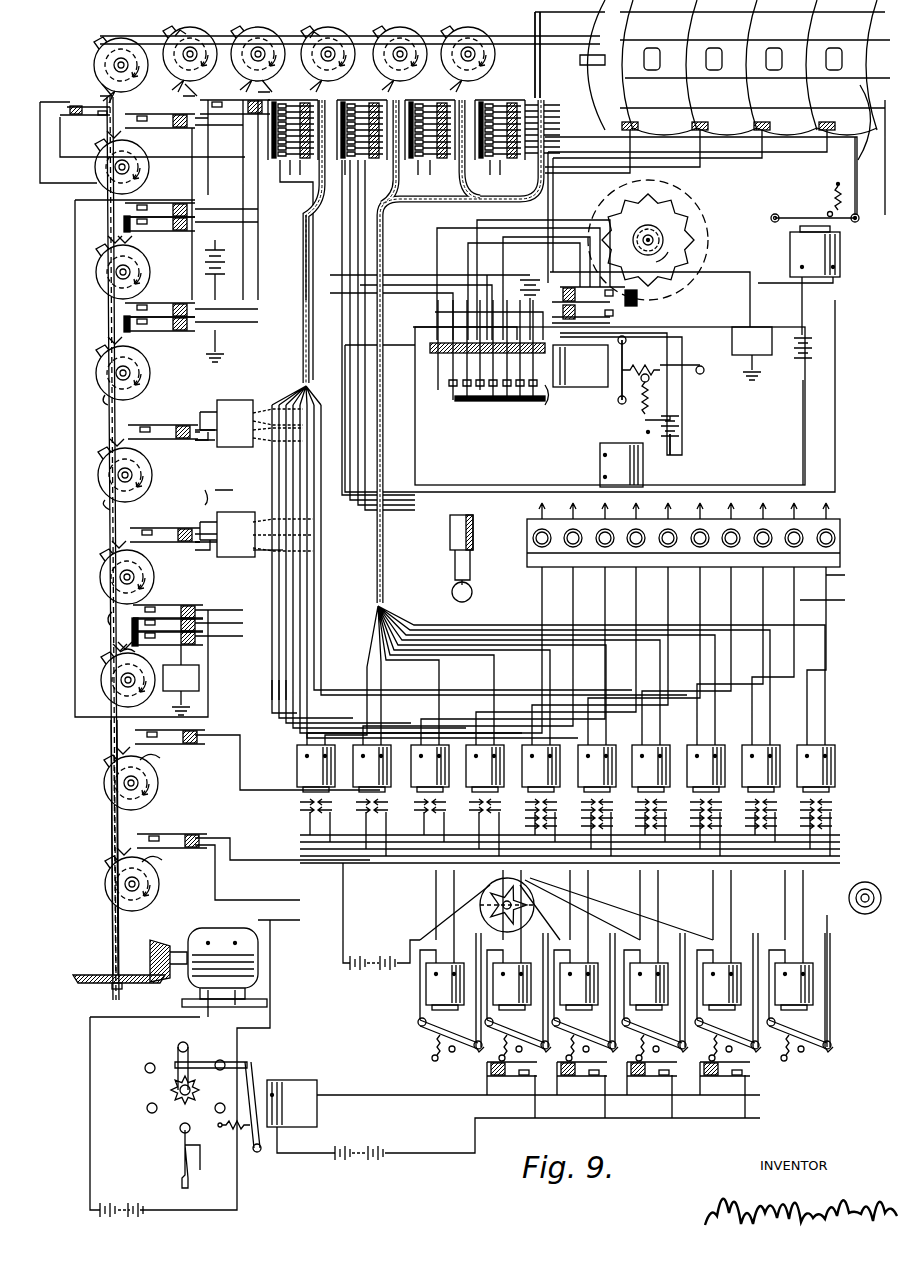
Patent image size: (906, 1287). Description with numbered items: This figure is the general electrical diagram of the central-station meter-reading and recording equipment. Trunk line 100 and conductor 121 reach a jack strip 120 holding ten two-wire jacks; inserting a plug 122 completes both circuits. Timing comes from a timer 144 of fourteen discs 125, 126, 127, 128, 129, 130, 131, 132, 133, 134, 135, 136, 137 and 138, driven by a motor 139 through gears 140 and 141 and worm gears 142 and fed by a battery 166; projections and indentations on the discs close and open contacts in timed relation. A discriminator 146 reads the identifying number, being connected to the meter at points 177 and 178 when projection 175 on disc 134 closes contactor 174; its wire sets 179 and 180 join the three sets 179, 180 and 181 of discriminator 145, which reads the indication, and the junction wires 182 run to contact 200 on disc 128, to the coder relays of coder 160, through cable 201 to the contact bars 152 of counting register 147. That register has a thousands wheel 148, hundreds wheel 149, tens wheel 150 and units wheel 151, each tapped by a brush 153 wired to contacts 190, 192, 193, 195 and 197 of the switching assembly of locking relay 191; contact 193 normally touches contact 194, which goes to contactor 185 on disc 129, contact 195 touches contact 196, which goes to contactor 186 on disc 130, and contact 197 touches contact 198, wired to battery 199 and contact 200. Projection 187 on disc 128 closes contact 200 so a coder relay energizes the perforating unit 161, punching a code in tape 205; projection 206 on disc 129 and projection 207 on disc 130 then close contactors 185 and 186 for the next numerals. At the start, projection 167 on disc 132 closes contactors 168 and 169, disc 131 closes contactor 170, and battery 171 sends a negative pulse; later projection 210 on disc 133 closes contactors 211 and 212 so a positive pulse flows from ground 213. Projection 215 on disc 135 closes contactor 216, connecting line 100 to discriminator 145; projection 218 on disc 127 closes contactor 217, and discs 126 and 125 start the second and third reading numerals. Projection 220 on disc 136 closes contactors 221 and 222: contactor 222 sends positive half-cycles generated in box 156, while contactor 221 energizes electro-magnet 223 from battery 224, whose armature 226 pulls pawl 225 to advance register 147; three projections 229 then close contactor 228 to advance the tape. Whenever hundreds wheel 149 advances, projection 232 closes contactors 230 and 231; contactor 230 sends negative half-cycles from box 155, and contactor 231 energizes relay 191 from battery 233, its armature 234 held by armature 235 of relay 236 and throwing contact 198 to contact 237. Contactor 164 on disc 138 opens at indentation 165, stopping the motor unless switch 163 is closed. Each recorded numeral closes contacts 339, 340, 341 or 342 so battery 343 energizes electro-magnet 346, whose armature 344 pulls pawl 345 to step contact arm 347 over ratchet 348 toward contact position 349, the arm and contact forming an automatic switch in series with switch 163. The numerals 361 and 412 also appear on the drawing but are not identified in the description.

The trunk line 100 is at (828, 516).
The jack strip 120 is at (842, 541).
The conductor 121 is at (468, 518).
The plug 122 is at (474, 538).
The disc 125 is at (454, 36).
The disc 126 is at (388, 36).
The disc 127 is at (322, 36).
The disc 128 is at (242, 36).
The disc 129 is at (184, 36).
The disc 130 is at (110, 40).
The disc 131 is at (95, 182).
The disc 132 is at (96, 272).
The disc 133 is at (96, 376).
The disc 134 is at (98, 476).
The disc 135 is at (100, 578).
The disc 136 is at (100, 682).
The disc 137 is at (104, 785).
The disc 138 is at (106, 884).
The motor 139 is at (260, 961).
The gear 140 is at (152, 940).
The gear 141 is at (95, 975).
The worm gears 142 is at (120, 788).
The timer 144 is at (80, 754).
The discriminator 145 is at (213, 550).
The discriminator 146 is at (215, 410).
The counting register 147 is at (772, 203).
The thousands number wheel 148 is at (634, 132).
The hundreds wheel 149 is at (700, 132).
The tens wheel 150 is at (762, 132).
The units wheel 151 is at (827, 132).
The electrical contactor bars 152 is at (538, 48).
The brush 153 is at (862, 150).
The alternating current generator and rectifier 155 is at (762, 365).
The alternating current generator and rectifier 156 is at (200, 688).
The coder 160 is at (286, 789).
The perforating unit 161 is at (392, 1004).
The switch 163 is at (190, 1167).
The contactor 164 is at (150, 836).
The indentation 165 is at (152, 863).
The battery 166 is at (120, 1224).
The projection 167 is at (130, 241).
The contactor 168 is at (125, 208).
The contactor 169 is at (125, 224).
The contactor 170 is at (130, 118).
The battery 171 is at (203, 270).
The contactor 174 is at (133, 426).
The projection 175 is at (106, 502).
The point 177 is at (215, 522).
The point 178 is at (213, 440).
The set of wires 179 is at (262, 408).
The set of wires 180 is at (262, 444).
The set of wires 181 is at (262, 556).
The wires 182 is at (280, 665).
The contactor 185 is at (200, 92).
The contactor 186 is at (104, 88).
The projection 187 is at (272, 84).
The contact 190 is at (480, 392).
The locking relay 191 is at (548, 400).
The contact 192 is at (438, 392).
The contact 193 is at (507, 405).
The contact 194 is at (494, 405).
The contact 195 is at (468, 405).
The contact 196 is at (455, 405).
The contact 197 is at (533, 395).
The contact 198 is at (545, 405).
The battery 199 is at (544, 282).
The contact 200 is at (272, 182).
The cable 201 is at (384, 298).
The tape 205 is at (827, 880).
The projection 206 is at (203, 106).
The projection 207 is at (180, 34).
The projection 210 is at (100, 396).
The contactor 211 is at (125, 308).
The contactor 212 is at (125, 324).
The ground 213 is at (206, 355).
The projection 215 is at (112, 622).
The contactor 216 is at (120, 530).
The contactor 217 is at (318, 182).
The projection 218 is at (312, 36).
The projection 220 is at (116, 656).
The contactor 221 is at (148, 620).
The contactor 222 is at (167, 632).
The electro-magnet 223 is at (842, 252).
The battery 224 is at (815, 350).
The pawl 225 is at (856, 210).
The armature 226 is at (826, 216).
The contactor 228 is at (135, 737).
The projections 229 is at (150, 762).
The contactor 230 is at (638, 304).
The contactor 231 is at (600, 314).
The projection 232 is at (692, 218).
The battery 233 is at (682, 422).
The armature 234 is at (618, 410).
The armature 235 is at (648, 436).
The relay 236 is at (598, 470).
The contact 237 is at (520, 395).
The contact 339 is at (523, 1078).
The contact 340 is at (595, 1078).
The contact 341 is at (665, 1078).
The contact 342 is at (738, 1078).
The battery 343 is at (362, 1162).
The armature 344 is at (255, 1076).
The pawl 345 is at (240, 1062).
The electro-magnet 346 is at (305, 1080).
The contact arm 347 is at (176, 1055).
The ratchet 348 is at (168, 1090).
The contact position 349 is at (190, 1046).
The relay contact 361 is at (233, 491).
The contact stacks 412 is at (433, 1240).